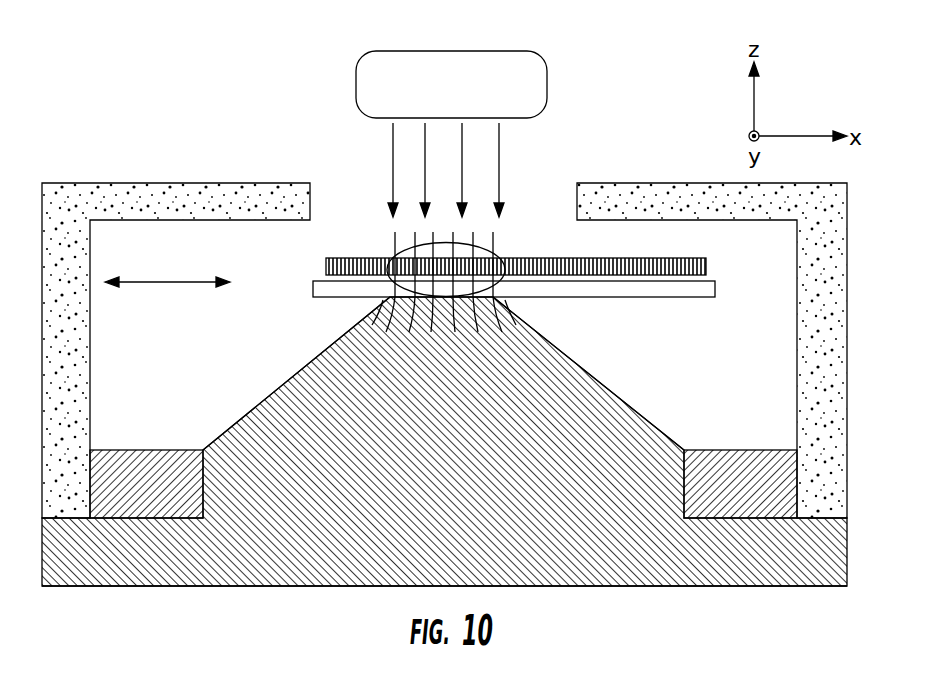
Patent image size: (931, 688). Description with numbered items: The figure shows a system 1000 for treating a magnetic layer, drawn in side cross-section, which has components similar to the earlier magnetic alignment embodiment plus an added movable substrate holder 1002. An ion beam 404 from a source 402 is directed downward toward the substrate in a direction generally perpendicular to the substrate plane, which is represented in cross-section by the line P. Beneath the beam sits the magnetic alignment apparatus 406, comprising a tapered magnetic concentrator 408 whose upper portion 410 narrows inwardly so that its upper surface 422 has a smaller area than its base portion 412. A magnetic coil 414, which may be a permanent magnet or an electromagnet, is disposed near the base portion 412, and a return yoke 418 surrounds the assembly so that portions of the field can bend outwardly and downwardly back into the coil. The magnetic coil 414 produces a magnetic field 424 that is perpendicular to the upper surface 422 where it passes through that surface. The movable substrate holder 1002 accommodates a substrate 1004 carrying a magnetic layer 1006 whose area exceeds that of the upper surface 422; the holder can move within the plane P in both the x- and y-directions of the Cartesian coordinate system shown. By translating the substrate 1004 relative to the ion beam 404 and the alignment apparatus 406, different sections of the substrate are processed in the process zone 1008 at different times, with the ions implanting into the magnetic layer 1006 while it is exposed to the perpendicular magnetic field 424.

The system 1000 is at (143, 115).
The radiation source 402 is at (355, 77).
The ion beam 404 is at (352, 176).
The return yoke 418 is at (193, 183).
The magnetic alignment apparatus 406 is at (261, 587).
The magnetic concentrator 408 is at (272, 393).
The upper portion 410 is at (595, 377).
The base portion 412 is at (675, 587).
The magnetic coil 414 is at (173, 450).
The movable substrate holder 1002 is at (713, 297).
The substrate 1004 is at (328, 282).
The magnetic layer 1006 is at (370, 259).
The magnetic field 424 is at (520, 243).
The process zone 1008 is at (498, 283).
The upper surface 422 is at (412, 306).
The plane P is at (166, 282).